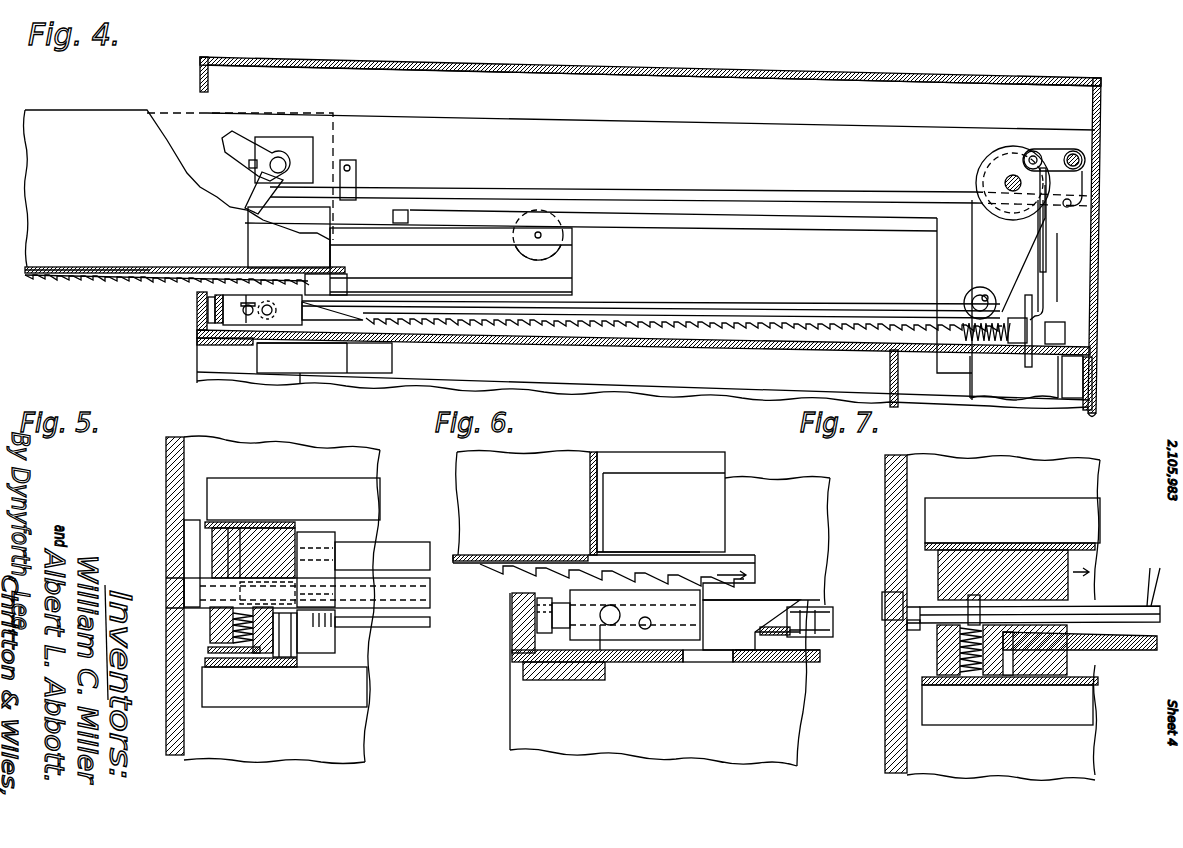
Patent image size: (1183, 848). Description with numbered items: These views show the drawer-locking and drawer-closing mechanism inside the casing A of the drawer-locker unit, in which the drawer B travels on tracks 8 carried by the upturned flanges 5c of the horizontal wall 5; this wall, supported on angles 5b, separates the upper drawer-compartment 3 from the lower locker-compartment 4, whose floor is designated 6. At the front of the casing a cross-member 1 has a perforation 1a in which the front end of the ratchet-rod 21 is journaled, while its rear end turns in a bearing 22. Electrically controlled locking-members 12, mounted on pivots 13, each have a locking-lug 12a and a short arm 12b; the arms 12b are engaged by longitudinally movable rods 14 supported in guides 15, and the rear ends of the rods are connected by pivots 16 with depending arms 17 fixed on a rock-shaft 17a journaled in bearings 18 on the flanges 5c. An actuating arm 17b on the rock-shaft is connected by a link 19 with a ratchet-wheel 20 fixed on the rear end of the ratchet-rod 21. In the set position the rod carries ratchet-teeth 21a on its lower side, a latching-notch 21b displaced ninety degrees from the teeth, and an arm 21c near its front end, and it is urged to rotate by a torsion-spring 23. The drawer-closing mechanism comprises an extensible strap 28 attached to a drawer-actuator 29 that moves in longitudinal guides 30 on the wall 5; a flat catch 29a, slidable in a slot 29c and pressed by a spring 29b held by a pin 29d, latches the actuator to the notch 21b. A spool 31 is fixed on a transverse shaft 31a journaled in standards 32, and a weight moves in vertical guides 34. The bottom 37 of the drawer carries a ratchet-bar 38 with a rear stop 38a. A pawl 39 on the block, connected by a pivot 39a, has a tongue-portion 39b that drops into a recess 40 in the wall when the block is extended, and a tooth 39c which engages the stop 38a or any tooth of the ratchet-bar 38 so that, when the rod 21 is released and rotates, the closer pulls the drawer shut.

In FIG. 4, the casing A is at (662, 66).
In FIG. 5, the casing A is at (166, 448).
In FIG. 6, the casing A is at (510, 740).
In FIG. 7, the casing A is at (885, 485).
In FIG. 4, the drawer B is at (179, 188).
In FIG. 6, the drawer B is at (590, 503).
In FIG. 4, the cross-member 1 is at (189, 306).
In FIG. 5, the cross-member 1 is at (166, 470).
In FIG. 6, the cross-member 1 is at (512, 680).
In FIG. 7, the cross-member 1 is at (885, 518).
In FIG. 5, the perforation 1a is at (166, 585).
In FIG. 7, the perforation 1a is at (885, 595).
In FIG. 4, the drawer-compartment 3 is at (841, 90).
In FIG. 4, the locker-compartment 4 is at (368, 358).
In FIG. 6, the locker-compartment 4 is at (650, 731).
In FIG. 4, the horizontal wall 5 is at (700, 350).
In FIG. 6, the horizontal wall 5 is at (805, 665).
In FIG. 4, the angles 5b is at (790, 392).
In FIG. 4, the upturned flanges 5c is at (545, 118).
In FIG. 4, the floor of the locker-compartment 6 is at (696, 392).
In FIG. 4, the tracks 8 is at (698, 212).
In FIG. 4, the locking-members 12 is at (262, 150).
In FIG. 4, the locking-lug 12a is at (249, 166).
In FIG. 4, the short arm 12b is at (250, 204).
In FIG. 4, the pivots 13 is at (288, 165).
In FIG. 4, the rods 14 is at (575, 190).
In FIG. 4, the guides 15 is at (358, 168).
In FIG. 4, the pivots 16 is at (1072, 206).
In FIG. 4, the depending arms 17 is at (1075, 185).
In FIG. 4, the rock-shaft 17a is at (1082, 158).
In FIG. 4, the actuating arm 17b is at (1063, 152).
In FIG. 4, the bearings 18 is at (1090, 170).
In FIG. 4, the link 19 is at (1048, 245).
In FIG. 4, the ratchet-wheel 20 is at (1032, 320).
In FIG. 4, the ratchet-rod 21 is at (790, 305).
In FIG. 5, the ratchet-rod 21 is at (365, 620).
In FIG. 6, the ratchet-rod 21 is at (813, 624).
In FIG. 7, the ratchet-rod 21 is at (1118, 598).
In FIG. 4, the ratchet-teeth 21a is at (762, 333).
In FIG. 6, the ratchet-teeth 21a is at (812, 630).
In FIG. 7, the ratchet-teeth 21a is at (1140, 578).
In FIG. 5, the latching-notch 21b is at (236, 522).
In FIG. 7, the latching-notch 21b is at (968, 612).
In FIG. 4, the arm 21c is at (210, 320).
In FIG. 5, the arm 21c is at (192, 520).
In FIG. 6, the arm 21c is at (537, 628).
In FIG. 7, the arm 21c is at (915, 630).
In FIG. 4, the bearing 22 is at (1065, 335).
In FIG. 4, the torsion-spring 23 is at (960, 325).
In FIG. 4, the extensible strap 28 is at (1010, 275).
In FIG. 5, the extensible strap 28 is at (395, 542).
In FIG. 4, the drawer-actuator 29 is at (225, 335).
In FIG. 5, the drawer-actuator 29 is at (212, 543).
In FIG. 6, the drawer-actuator 29 is at (618, 590).
In FIG. 7, the drawer-actuator 29 is at (990, 548).
In FIG. 5, the catch 29a is at (285, 545).
In FIG. 6, the catch 29a is at (608, 640).
In FIG. 7, the catch 29a is at (995, 612).
In FIG. 5, the spring 29b is at (243, 652).
In FIG. 6, the spring 29b is at (625, 635).
In FIG. 7, the spring 29b is at (980, 675).
In FIG. 4, the slot 29c is at (236, 290).
In FIG. 6, the slot 29c is at (585, 600).
In FIG. 5, the pin 29d is at (205, 665).
In FIG. 6, the pin 29d is at (560, 665).
In FIG. 7, the pin 29d is at (950, 685).
In FIG. 5, the longitudinal guides 30 is at (283, 490).
In FIG. 7, the longitudinal guides 30 is at (1068, 490).
In FIG. 4, the spool 31 is at (985, 160).
In FIG. 4, the transverse shaft 31a is at (1005, 183).
In FIG. 4, the standards 32 is at (1060, 278).
In FIG. 4, the vertical guides 34 is at (1045, 395).
In FIG. 4, the bottom of the drawer 37 is at (86, 267).
In FIG. 6, the bottom of the drawer 37 is at (476, 560).
In FIG. 4, the ratchet-bar 38 is at (145, 267).
In FIG. 6, the ratchet-bar 38 is at (505, 565).
In FIG. 4, the stop 38a is at (348, 282).
In FIG. 6, the stop 38a is at (745, 596).
In FIG. 4, the pawl 39 is at (310, 322).
In FIG. 5, the pawl 39 is at (360, 628).
In FIG. 6, the pawl 39 is at (751, 625).
In FIG. 7, the pawl 39 is at (1145, 650).
In FIG. 4, the pivot 39a is at (266, 320).
In FIG. 5, the pivot 39a is at (287, 657).
In FIG. 6, the pivot 39a is at (660, 623).
In FIG. 7, the pivot 39a is at (1010, 675).
In FIG. 4, the tongue-portion 39b is at (317, 355).
In FIG. 6, the tongue-portion 39b is at (755, 652).
In FIG. 4, the tooth 39c is at (305, 268).
In FIG. 5, the tooth 39c is at (335, 590).
In FIG. 6, the tooth 39c is at (690, 585).
In FIG. 4, the recess 40 is at (312, 373).
In FIG. 6, the recess 40 is at (710, 662).